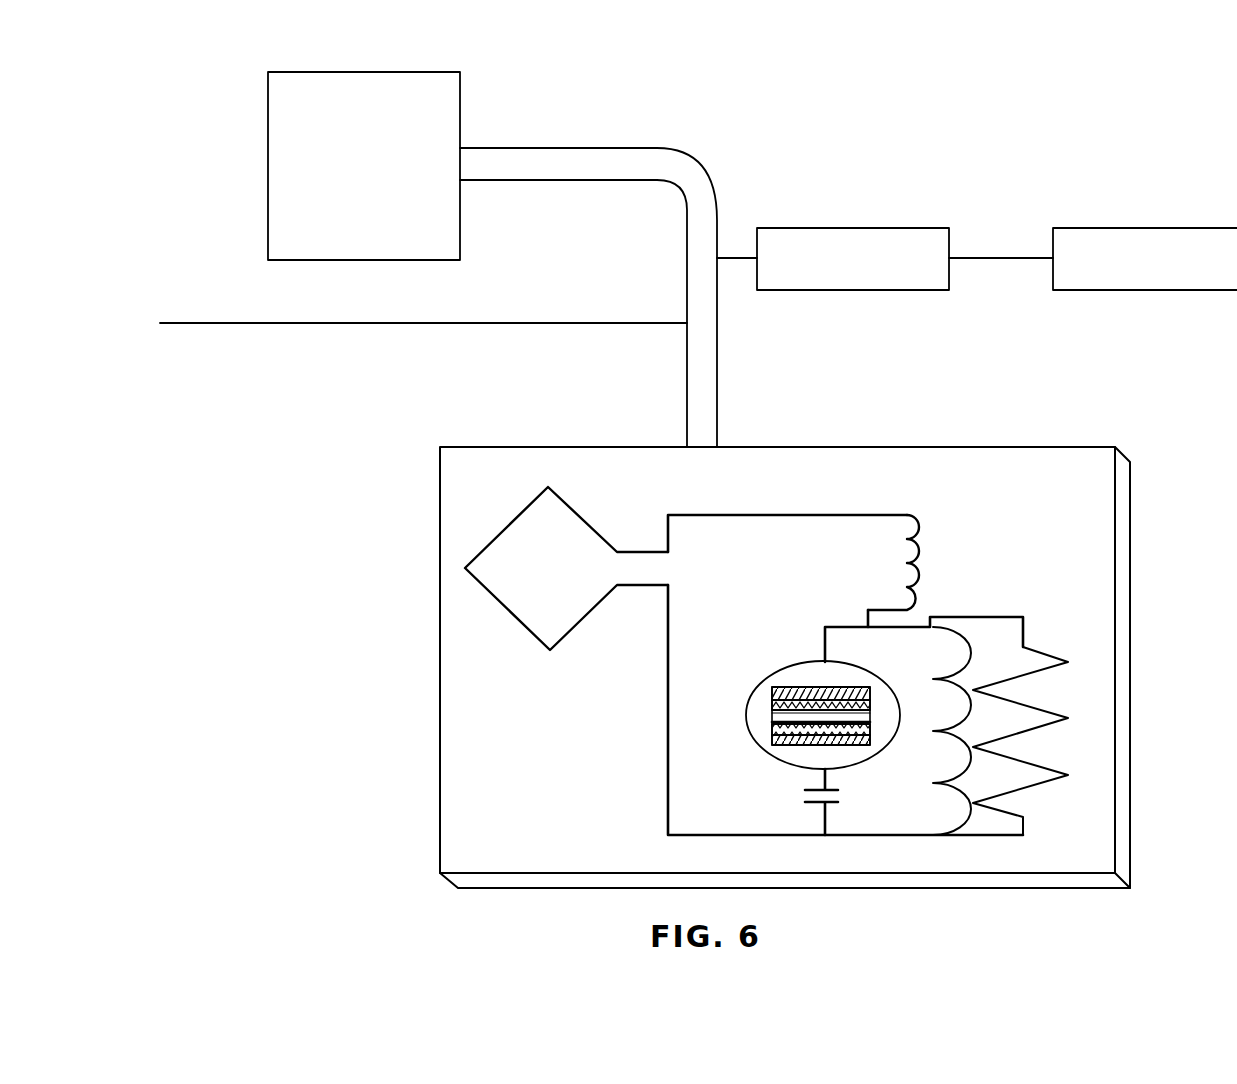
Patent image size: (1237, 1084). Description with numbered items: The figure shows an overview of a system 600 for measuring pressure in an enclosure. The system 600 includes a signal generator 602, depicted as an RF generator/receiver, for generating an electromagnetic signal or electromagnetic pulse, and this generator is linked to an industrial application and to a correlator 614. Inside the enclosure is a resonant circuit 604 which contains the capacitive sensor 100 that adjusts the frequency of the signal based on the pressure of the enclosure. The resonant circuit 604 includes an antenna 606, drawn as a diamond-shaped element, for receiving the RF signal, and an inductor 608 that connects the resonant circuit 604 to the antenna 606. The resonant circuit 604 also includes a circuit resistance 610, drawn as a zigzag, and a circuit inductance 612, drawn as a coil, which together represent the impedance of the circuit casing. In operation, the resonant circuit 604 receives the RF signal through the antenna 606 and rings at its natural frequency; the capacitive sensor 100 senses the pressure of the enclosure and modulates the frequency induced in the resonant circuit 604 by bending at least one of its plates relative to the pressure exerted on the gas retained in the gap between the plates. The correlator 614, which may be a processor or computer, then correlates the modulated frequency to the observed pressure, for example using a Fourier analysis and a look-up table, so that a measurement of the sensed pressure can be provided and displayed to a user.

The system 600 is at (360, 455).
The signal generator 602 is at (838, 228).
The resonant circuit 604 is at (986, 578).
The antenna 606 is at (500, 529).
The inductor 608 is at (918, 467).
The circuit resistance 610 is at (1030, 676).
The circuit inductance 612 is at (973, 718).
The correlator 614 is at (1113, 228).
The capacitive sensor 100 is at (773, 745).